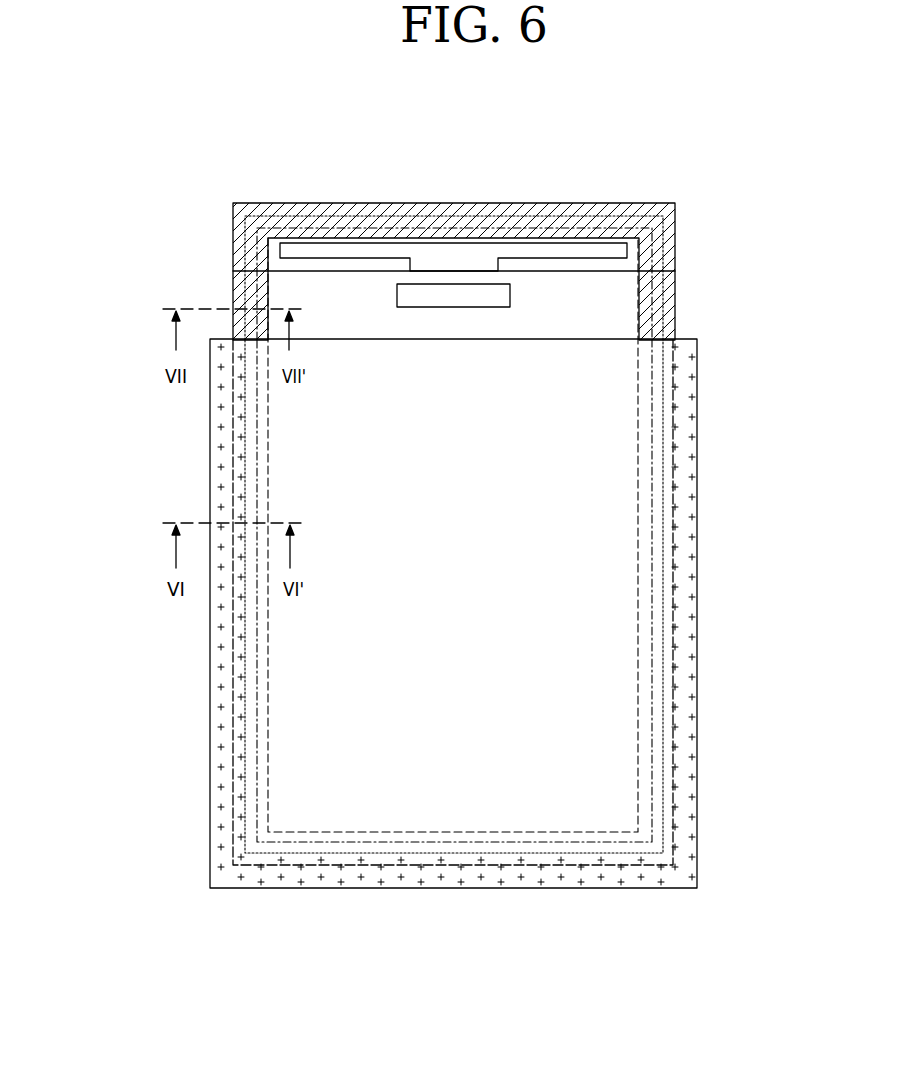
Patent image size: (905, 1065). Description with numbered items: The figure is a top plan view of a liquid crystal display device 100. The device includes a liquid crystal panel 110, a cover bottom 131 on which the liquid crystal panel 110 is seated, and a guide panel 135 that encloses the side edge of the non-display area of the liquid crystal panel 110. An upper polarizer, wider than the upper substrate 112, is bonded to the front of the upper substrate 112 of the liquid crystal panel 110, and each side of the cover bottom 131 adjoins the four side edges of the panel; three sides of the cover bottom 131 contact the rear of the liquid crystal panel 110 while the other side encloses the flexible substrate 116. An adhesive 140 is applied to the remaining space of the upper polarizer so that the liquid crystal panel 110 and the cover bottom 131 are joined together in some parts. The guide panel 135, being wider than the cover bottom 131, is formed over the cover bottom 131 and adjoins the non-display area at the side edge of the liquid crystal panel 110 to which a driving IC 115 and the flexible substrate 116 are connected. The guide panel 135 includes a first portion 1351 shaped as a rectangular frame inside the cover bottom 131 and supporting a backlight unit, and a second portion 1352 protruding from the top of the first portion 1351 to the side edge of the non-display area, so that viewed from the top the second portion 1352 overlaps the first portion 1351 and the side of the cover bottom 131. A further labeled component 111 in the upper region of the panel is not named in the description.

The liquid crystal display device 100 is at (706, 182).
The liquid crystal panel 110 is at (782, 280).
The upper frame 111 is at (676, 292).
The upper substrate 112 is at (678, 358).
The driving IC 115 is at (498, 297).
The flexible substrate 116 is at (461, 258).
The cover bottom 131 is at (658, 714).
The guide panel 135 is at (97, 268).
The first portion 1351 is at (263, 417).
The second portion 1352 is at (236, 287).
The adhesive 140 is at (682, 777).